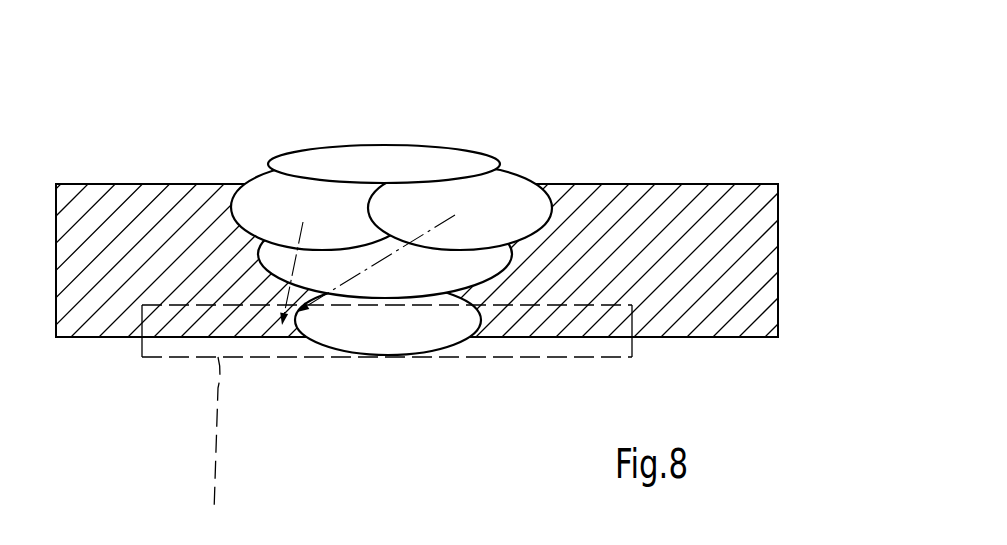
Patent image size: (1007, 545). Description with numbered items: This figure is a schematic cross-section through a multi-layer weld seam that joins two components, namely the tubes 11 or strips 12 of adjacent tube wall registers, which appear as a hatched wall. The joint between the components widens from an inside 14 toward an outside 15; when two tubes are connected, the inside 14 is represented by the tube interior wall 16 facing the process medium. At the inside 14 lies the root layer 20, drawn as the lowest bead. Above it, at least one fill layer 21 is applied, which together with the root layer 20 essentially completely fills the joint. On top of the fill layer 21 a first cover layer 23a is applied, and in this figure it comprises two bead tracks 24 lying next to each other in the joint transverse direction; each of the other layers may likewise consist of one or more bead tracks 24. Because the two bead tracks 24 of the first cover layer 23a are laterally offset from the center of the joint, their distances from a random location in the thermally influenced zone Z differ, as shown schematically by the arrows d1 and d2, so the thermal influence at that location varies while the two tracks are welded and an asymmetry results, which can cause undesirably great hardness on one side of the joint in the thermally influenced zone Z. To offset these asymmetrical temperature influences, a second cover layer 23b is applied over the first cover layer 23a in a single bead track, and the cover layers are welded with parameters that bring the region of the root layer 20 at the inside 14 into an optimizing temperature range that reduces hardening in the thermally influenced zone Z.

The tube 11 is at (459, 319).
The strip 12 is at (106, 316).
The inside 14 is at (387, 393).
The tube interior wall 16 is at (549, 362).
The outside 15 is at (387, 247).
The root layer 20 is at (396, 340).
The fill layer 21 is at (395, 276).
The first cover layer 23a is at (386, 203).
The second cover layer 23b is at (410, 150).
The bead track 24 is at (260, 200).
The arrow d1 is at (290, 269).
The arrow d2 is at (377, 263).
The thermally influenced zone Z is at (213, 447).